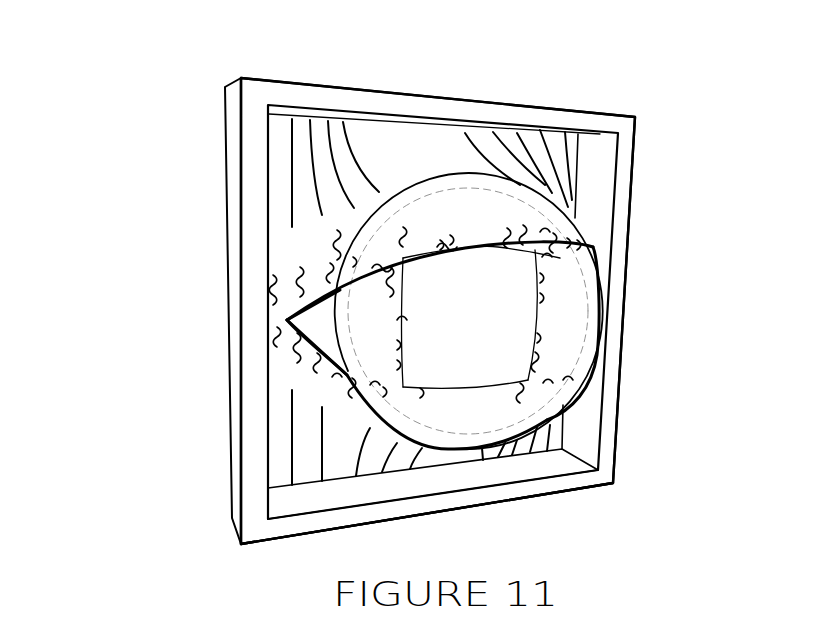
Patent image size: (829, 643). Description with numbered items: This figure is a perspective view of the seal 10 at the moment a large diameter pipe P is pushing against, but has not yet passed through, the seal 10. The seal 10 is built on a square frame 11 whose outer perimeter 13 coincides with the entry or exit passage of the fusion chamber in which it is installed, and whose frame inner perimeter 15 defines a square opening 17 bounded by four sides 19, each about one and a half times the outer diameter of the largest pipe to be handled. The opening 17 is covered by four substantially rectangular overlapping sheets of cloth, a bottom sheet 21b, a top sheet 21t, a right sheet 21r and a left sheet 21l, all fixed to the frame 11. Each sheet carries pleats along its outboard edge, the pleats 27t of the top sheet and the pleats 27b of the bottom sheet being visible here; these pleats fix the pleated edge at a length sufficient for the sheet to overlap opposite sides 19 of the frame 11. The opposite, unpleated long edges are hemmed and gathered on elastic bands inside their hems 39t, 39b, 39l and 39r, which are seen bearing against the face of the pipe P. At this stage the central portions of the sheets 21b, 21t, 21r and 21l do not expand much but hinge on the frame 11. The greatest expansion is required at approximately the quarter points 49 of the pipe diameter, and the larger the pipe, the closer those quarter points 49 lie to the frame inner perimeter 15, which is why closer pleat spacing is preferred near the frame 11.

The seal 10 is at (130, 87).
The frame 11 is at (227, 125).
The outer perimeter 13 is at (235, 172).
The frame inner perimeter 15 is at (457, 488).
The square opening 17 is at (578, 162).
The sides 19 is at (550, 462).
The pipe P is at (438, 175).
The top sheet of cloth 21t is at (548, 238).
The bottom sheet of cloth 21b is at (450, 415).
The left sheet of cloth 21l is at (575, 297).
The right sheet of cloth 21r is at (370, 300).
The hem of top sheet 39t is at (560, 258).
The hem of bottom sheet 39b is at (528, 380).
The hem of left sheet 39l is at (540, 327).
The hem of right sheet 39r is at (403, 325).
The pleats of top sheet 27t is at (283, 128).
The pleats of bottom sheet 27b is at (315, 457).
The quarter points 49 is at (542, 138).